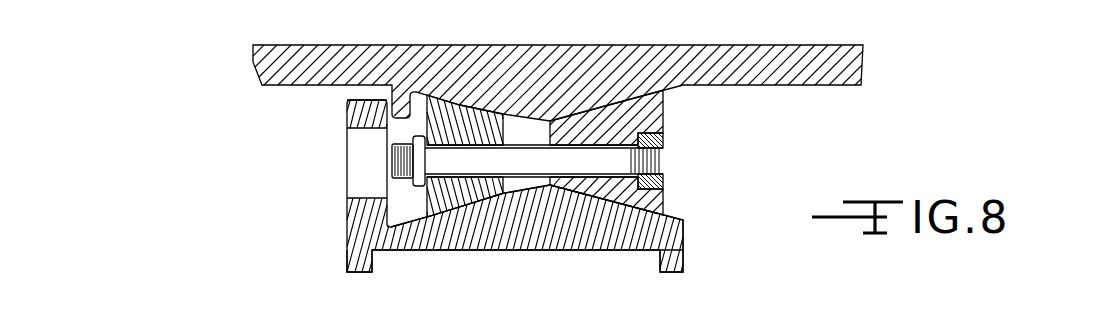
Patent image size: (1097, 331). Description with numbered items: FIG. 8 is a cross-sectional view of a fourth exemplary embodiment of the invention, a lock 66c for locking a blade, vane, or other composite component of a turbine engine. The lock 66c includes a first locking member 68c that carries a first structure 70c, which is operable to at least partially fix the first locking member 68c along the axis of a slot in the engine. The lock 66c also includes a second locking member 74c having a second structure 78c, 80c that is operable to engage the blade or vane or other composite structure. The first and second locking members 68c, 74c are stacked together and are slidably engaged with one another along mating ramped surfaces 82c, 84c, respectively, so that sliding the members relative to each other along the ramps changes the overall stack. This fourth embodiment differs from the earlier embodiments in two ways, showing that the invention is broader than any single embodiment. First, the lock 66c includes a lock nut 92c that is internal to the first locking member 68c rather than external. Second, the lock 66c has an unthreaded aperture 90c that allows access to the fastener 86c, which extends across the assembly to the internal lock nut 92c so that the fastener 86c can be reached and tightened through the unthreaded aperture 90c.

The lock 66c is at (551, 196).
The first locking member 68c is at (678, 127).
The first structure 70c is at (600, 106).
The second locking member 74c is at (326, 214).
The second structure 78c is at (350, 260).
The second structure 80c is at (673, 257).
The ramped surface 82c is at (600, 210).
The ramped surface 84c is at (578, 196).
The fastener 86c is at (392, 163).
The unthreaded aperture 90c is at (367, 130).
The lock nut 92c is at (655, 179).